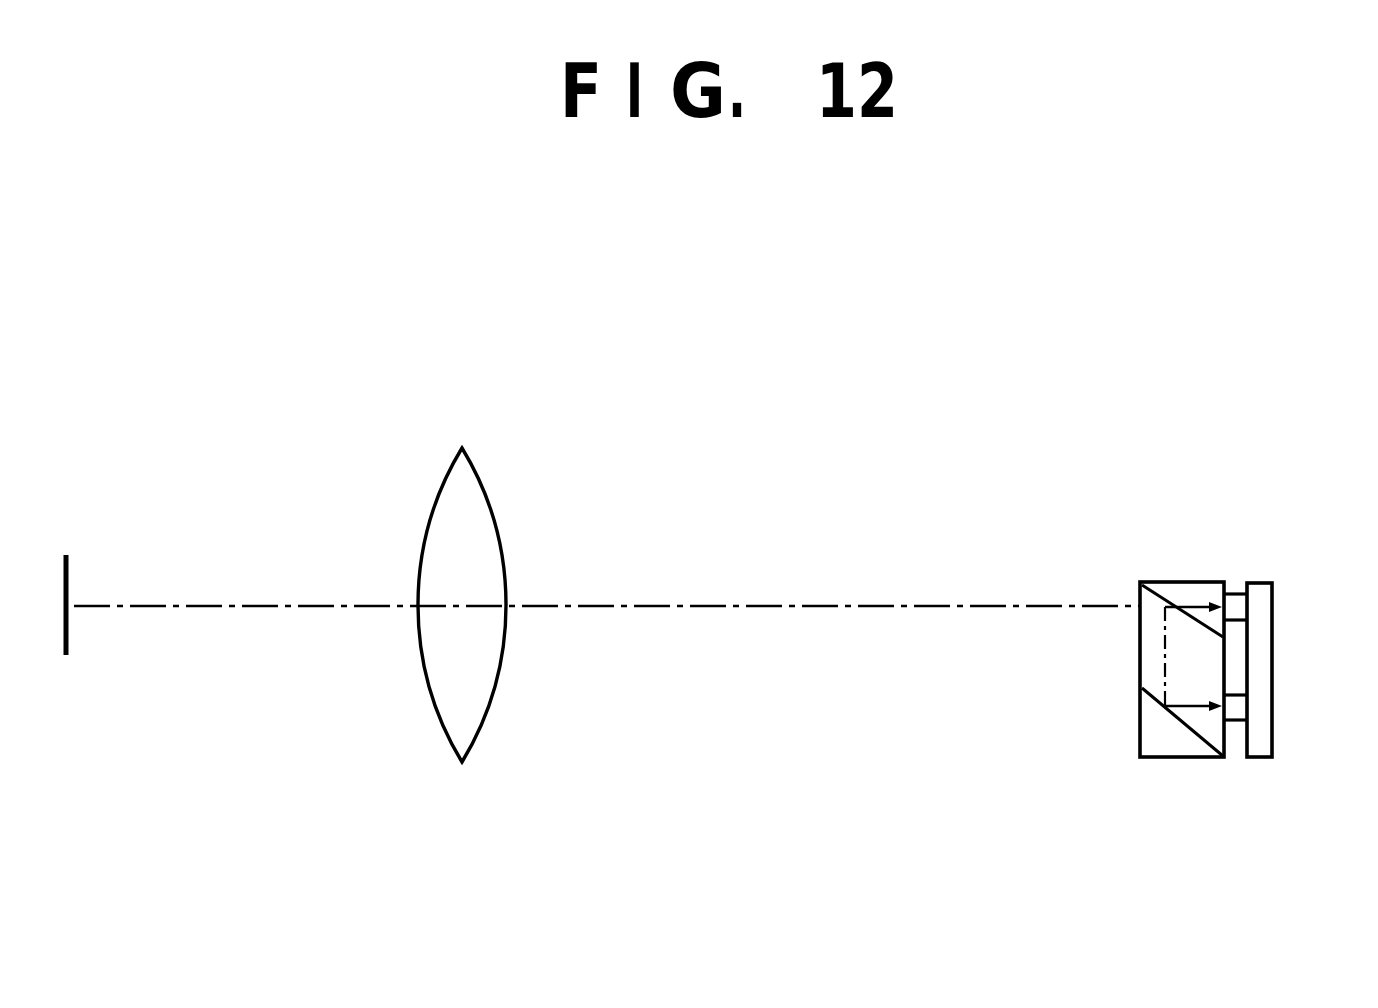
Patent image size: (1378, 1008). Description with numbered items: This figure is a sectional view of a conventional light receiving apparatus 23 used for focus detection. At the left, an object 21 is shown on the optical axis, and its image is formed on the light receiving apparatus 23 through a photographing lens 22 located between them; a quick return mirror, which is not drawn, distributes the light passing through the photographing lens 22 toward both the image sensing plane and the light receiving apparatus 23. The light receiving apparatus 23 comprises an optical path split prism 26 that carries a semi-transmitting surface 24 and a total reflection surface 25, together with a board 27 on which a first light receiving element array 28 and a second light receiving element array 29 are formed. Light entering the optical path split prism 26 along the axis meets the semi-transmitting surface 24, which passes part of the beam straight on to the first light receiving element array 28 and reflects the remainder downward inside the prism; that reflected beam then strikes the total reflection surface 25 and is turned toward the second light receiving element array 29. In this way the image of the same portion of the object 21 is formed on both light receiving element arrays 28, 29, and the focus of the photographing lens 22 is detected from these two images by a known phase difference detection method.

The object 21 is at (69, 580).
The photographing lens 22 is at (493, 520).
The light receiving apparatus 23 is at (1162, 570).
The semi-transmitting surface 24 is at (1172, 632).
The total reflection surface 25 is at (1172, 723).
The optical path split prism 26 is at (1178, 758).
The board 27 is at (1258, 670).
The first light receiving element array 28 is at (1235, 603).
The second light receiving element array 29 is at (1235, 712).